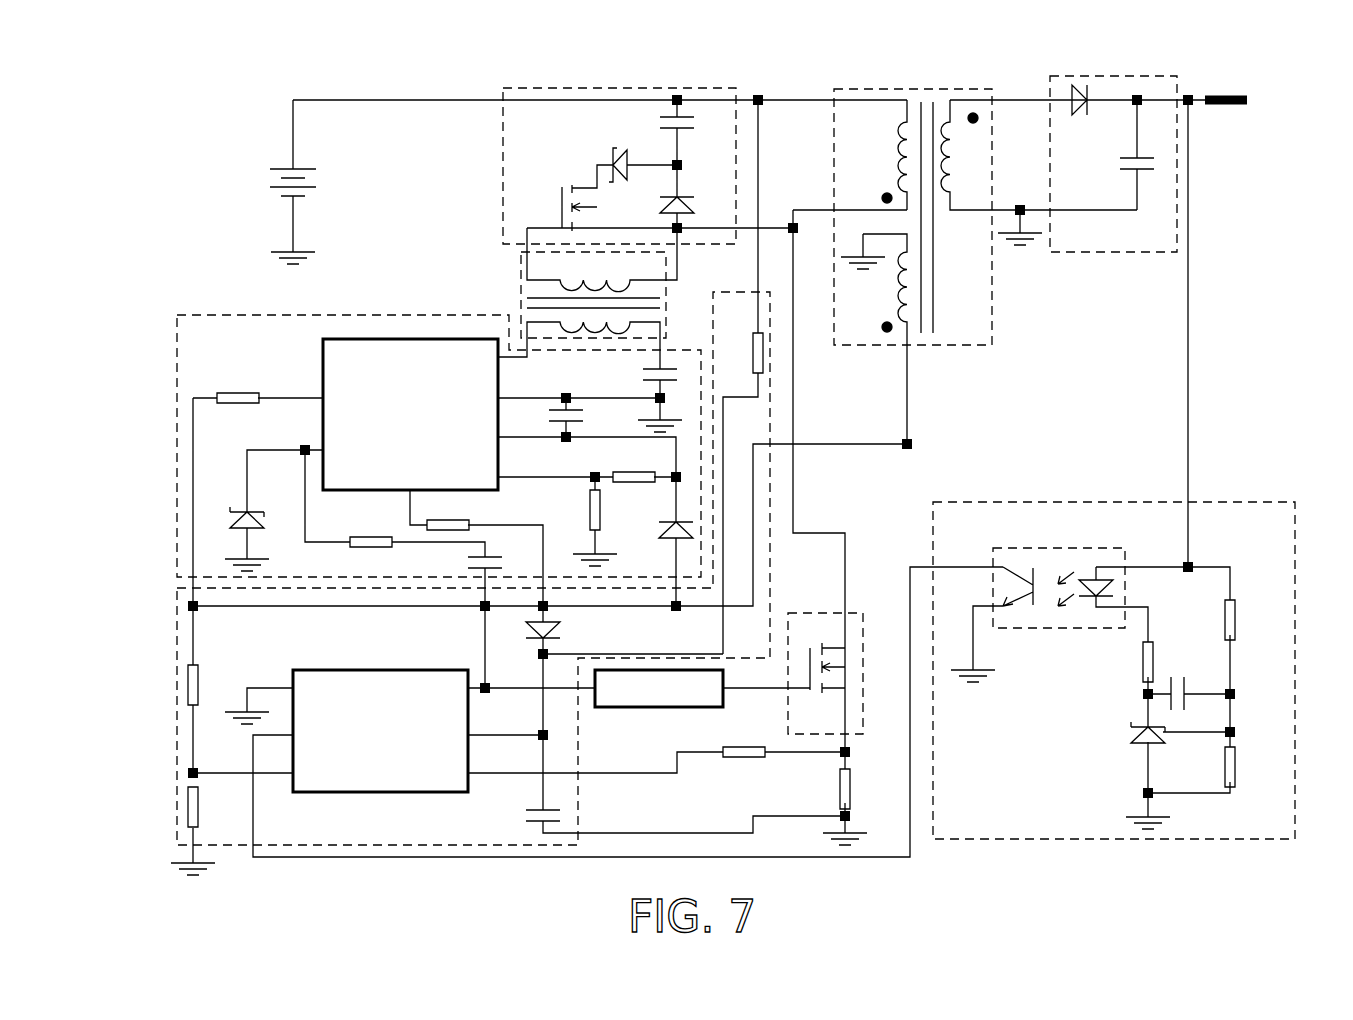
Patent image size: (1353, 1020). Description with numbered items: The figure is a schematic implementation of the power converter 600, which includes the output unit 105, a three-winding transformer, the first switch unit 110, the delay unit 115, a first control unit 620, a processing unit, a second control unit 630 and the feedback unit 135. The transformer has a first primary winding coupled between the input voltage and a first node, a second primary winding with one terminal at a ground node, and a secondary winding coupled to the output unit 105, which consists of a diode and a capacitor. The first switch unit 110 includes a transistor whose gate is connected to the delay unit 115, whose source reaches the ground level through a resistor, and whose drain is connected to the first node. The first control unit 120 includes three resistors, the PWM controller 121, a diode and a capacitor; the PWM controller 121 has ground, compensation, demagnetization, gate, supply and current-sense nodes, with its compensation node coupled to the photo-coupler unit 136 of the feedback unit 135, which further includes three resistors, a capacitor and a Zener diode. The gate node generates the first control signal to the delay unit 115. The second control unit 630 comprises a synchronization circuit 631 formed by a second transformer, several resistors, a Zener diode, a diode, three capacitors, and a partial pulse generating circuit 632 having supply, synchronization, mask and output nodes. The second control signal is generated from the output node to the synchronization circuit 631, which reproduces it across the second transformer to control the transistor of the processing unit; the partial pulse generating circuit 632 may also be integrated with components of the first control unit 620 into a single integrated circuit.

The power converter 600 is at (161, 74).
The output unit 105 is at (1100, 252).
The first switch unit 110 is at (823, 613).
The delay unit 115 is at (655, 707).
The first control unit 120 is at (503, 176).
The PWM controller 121 is at (352, 670).
The feedback unit 135 is at (1098, 502).
The photo-coupler unit 136 is at (1066, 548).
The first control unit 620 is at (177, 697).
The second control unit 630 is at (177, 506).
The synchronization circuit 631 is at (521, 285).
The partial pulse generating circuit 632 is at (323, 354).